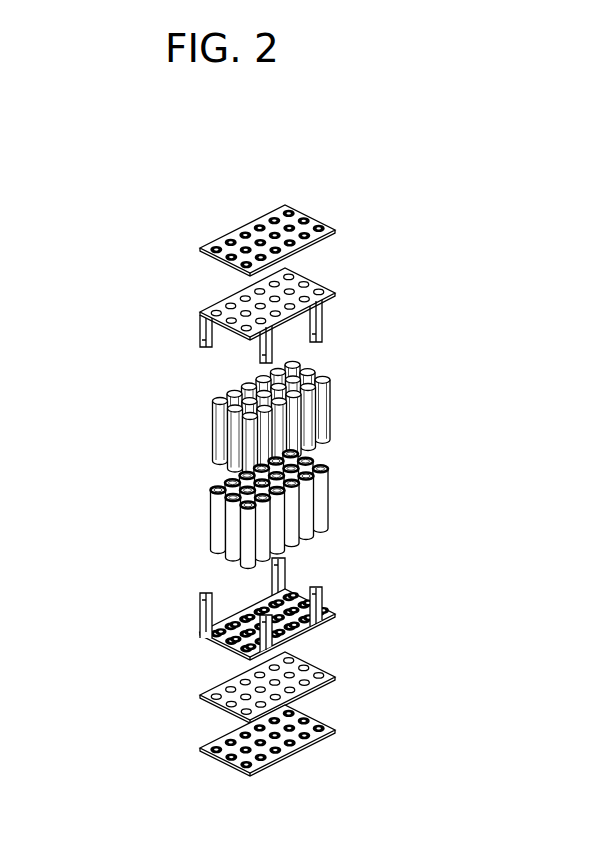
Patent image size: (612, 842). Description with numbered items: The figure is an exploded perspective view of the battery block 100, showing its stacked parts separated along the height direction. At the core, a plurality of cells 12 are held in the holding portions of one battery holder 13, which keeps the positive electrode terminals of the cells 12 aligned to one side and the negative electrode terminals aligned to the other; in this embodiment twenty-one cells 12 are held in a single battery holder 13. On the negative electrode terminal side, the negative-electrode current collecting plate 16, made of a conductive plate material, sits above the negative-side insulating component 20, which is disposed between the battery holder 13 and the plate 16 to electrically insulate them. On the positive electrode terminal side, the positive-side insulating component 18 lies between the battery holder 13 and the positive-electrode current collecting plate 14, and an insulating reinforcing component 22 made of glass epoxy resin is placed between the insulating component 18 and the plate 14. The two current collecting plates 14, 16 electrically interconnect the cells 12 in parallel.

The battery block 100 is at (87, 196).
The negative-electrode current collecting plate 16 is at (310, 212).
The negative-side insulating component 20 is at (320, 283).
The battery holder 13 is at (330, 423).
The cell 12 is at (328, 493).
The positive-side insulating component 18 is at (325, 615).
The insulating reinforcing component 22 is at (322, 677).
The positive-electrode current collecting plate 14 is at (322, 730).